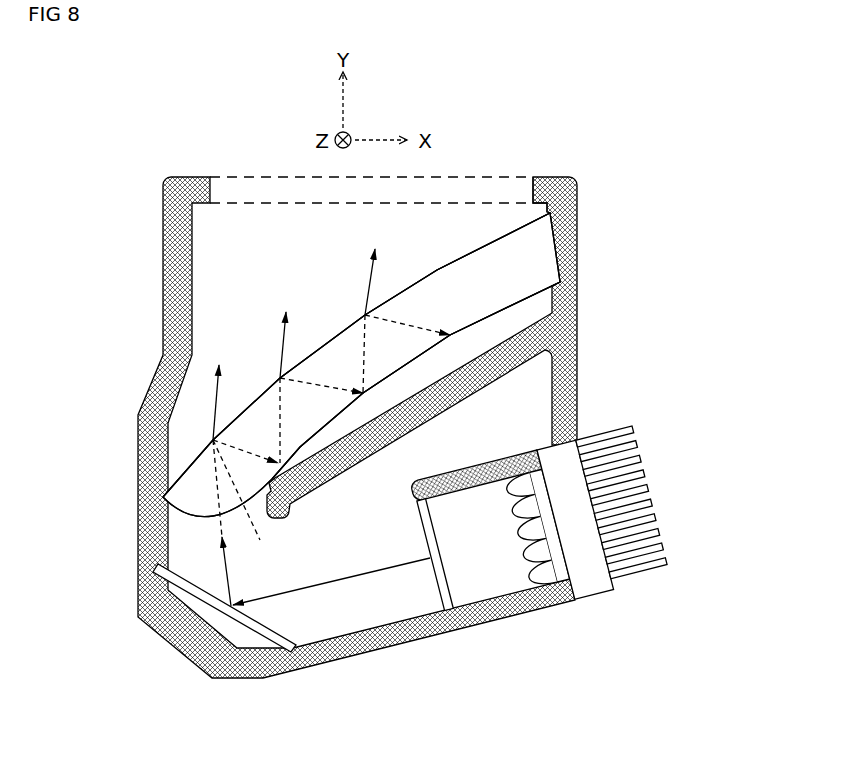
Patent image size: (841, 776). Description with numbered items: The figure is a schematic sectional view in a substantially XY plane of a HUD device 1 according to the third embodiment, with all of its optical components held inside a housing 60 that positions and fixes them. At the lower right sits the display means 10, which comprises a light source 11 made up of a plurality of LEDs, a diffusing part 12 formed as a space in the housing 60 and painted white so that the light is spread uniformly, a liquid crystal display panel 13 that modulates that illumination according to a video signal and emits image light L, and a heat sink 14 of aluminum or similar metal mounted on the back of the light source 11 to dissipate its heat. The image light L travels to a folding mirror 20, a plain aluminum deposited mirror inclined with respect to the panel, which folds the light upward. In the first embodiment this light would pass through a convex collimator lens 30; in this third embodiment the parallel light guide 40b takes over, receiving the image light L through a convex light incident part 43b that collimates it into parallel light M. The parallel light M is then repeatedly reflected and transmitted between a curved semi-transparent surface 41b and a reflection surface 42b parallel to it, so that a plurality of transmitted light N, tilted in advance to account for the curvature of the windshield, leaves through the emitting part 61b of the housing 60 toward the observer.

The HUD device 1 is at (167, 131).
The display means 10 is at (540, 569).
The light source 11 is at (530, 531).
The diffusing part 12 is at (476, 476).
The liquid crystal display panel 13 is at (493, 539).
The heat sink 14 is at (603, 512).
The folding mirror 20 is at (271, 645).
The collimator lens 30 is at (163, 496).
The parallel light guide 40b is at (432, 340).
The semi-transparent surface 41b is at (543, 218).
The reflection surface 42b is at (457, 380).
The light incident part 43b is at (186, 518).
The housing 60 is at (172, 266).
The emitting part 61b is at (533, 206).